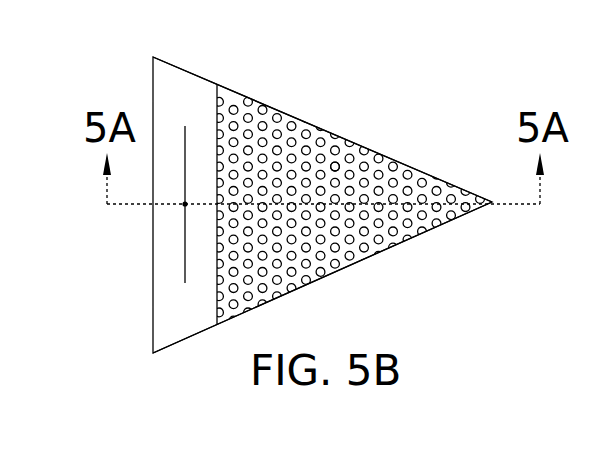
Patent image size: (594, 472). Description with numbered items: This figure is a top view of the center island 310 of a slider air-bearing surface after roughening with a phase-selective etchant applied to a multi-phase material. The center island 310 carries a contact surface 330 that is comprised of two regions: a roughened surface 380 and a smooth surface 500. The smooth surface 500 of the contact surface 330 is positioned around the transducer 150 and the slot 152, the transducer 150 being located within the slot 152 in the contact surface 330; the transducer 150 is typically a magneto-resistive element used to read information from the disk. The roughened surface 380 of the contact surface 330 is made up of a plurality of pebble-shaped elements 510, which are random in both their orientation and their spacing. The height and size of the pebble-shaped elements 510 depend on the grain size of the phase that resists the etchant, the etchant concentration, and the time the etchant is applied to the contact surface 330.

The smooth surface 500 is at (166, 93).
The center island 310 is at (183, 70).
The contact surface 330 is at (242, 115).
The roughened contact surface 380 is at (322, 168).
The transducer 150 is at (185, 204).
The slot 152 is at (185, 269).
The pebble-shaped elements 510 is at (297, 269).